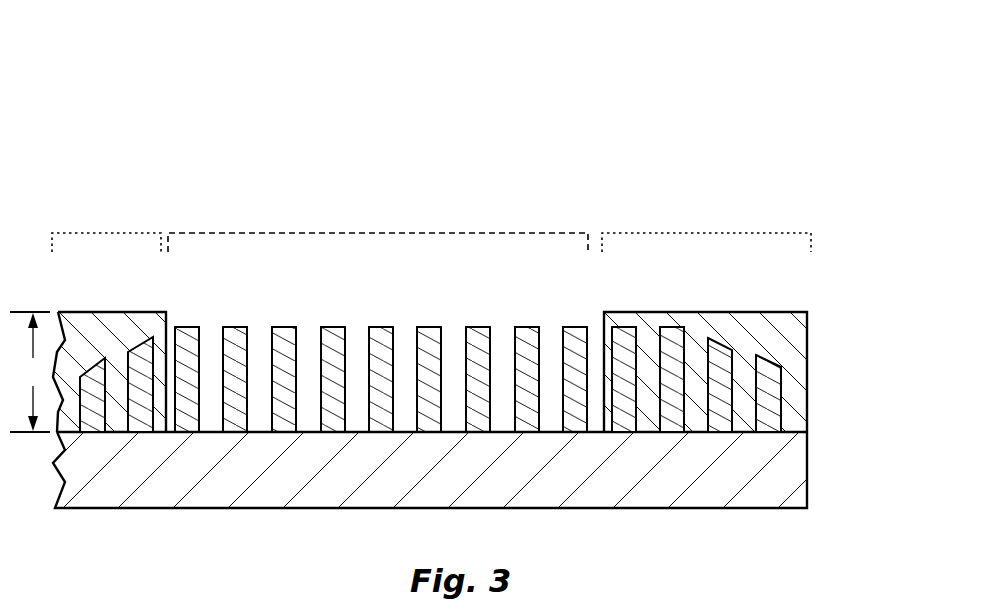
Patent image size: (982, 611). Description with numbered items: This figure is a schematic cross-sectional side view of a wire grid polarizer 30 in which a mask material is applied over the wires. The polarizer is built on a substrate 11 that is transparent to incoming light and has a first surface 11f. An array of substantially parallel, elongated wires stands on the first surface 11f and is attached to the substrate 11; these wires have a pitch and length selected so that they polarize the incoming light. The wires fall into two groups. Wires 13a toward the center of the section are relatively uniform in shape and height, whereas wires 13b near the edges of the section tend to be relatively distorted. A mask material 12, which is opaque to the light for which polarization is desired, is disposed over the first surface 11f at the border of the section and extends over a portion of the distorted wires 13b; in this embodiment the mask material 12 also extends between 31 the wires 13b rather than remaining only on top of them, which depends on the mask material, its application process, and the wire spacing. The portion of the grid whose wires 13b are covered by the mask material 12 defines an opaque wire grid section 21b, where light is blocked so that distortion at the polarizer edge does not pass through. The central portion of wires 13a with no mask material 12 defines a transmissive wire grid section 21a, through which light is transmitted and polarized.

The wire grid polarizer 30 is at (255, 92).
The substrate 11 is at (720, 490).
The first surface 11f is at (830, 432).
The mask material 12 is at (88, 314).
The wires 13a is at (476, 331).
The wires 13b is at (770, 370).
The transmissive wire grid section 21a is at (378, 228).
The opaque wire grid section 21b is at (431, 228).
The between the wires 31 is at (648, 370).